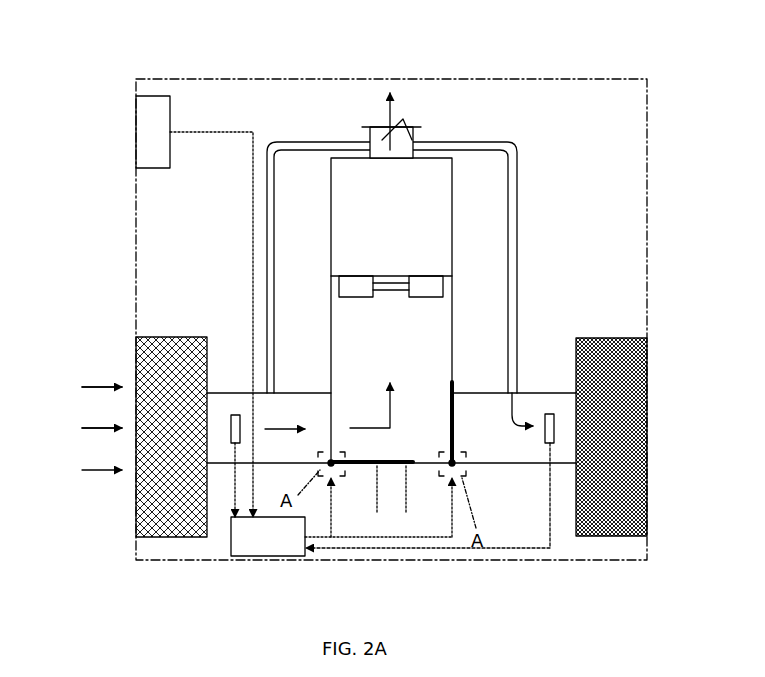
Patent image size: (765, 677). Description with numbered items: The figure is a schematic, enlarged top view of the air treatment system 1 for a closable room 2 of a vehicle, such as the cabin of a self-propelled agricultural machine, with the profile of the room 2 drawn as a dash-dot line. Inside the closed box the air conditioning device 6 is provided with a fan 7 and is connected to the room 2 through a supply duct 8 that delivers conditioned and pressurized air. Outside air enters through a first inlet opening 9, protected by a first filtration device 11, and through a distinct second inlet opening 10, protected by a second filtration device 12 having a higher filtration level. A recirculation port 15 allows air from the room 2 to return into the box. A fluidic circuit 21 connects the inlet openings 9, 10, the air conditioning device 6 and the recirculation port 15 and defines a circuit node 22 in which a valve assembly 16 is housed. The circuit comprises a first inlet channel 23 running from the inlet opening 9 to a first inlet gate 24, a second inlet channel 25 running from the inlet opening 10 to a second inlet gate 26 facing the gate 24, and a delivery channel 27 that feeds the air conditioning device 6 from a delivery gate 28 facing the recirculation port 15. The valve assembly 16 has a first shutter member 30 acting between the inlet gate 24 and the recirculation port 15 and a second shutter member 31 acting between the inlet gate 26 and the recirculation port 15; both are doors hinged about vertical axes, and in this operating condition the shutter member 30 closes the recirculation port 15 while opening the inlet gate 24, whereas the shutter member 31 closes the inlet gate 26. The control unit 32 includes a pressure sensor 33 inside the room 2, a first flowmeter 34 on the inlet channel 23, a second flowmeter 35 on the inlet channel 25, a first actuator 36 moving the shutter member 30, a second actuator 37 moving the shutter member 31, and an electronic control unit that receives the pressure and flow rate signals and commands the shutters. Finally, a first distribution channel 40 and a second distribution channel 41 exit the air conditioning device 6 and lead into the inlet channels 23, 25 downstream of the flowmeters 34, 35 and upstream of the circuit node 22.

The air treatment system 1 is at (170, 90).
The room 2 is at (596, 81).
The air conditioning device 6 is at (352, 202).
The fan 7 is at (425, 278).
The supply duct 8 is at (407, 130).
The first inlet opening 9 is at (130, 349).
The second inlet opening 10 is at (650, 365).
The first filtration device 11 is at (148, 497).
The second filtration device 12 is at (645, 497).
The recirculation port 15 is at (400, 493).
The valve assembly 16 is at (405, 372).
The fluidic circuit 21 is at (195, 100).
The circuit node 22 is at (425, 367).
The first inlet channel 23 is at (233, 400).
The first inlet gate 24 is at (328, 408).
The second inlet channel 25 is at (510, 457).
The second inlet gate 26 is at (457, 401).
The delivery channel 27 is at (447, 301).
The delivery gate 28 is at (335, 368).
The first shutter member 30 is at (395, 459).
The second shutter member 31 is at (456, 427).
The control unit 32 is at (278, 565).
The pressure sensor 33 is at (150, 133).
The first flowmeter 34 is at (230, 447).
The second flowmeter 35 is at (548, 412).
The first actuator 36 is at (340, 478).
The second actuator 37 is at (462, 478).
The first distribution channel 40 is at (287, 145).
The second distribution channel 41 is at (490, 148).